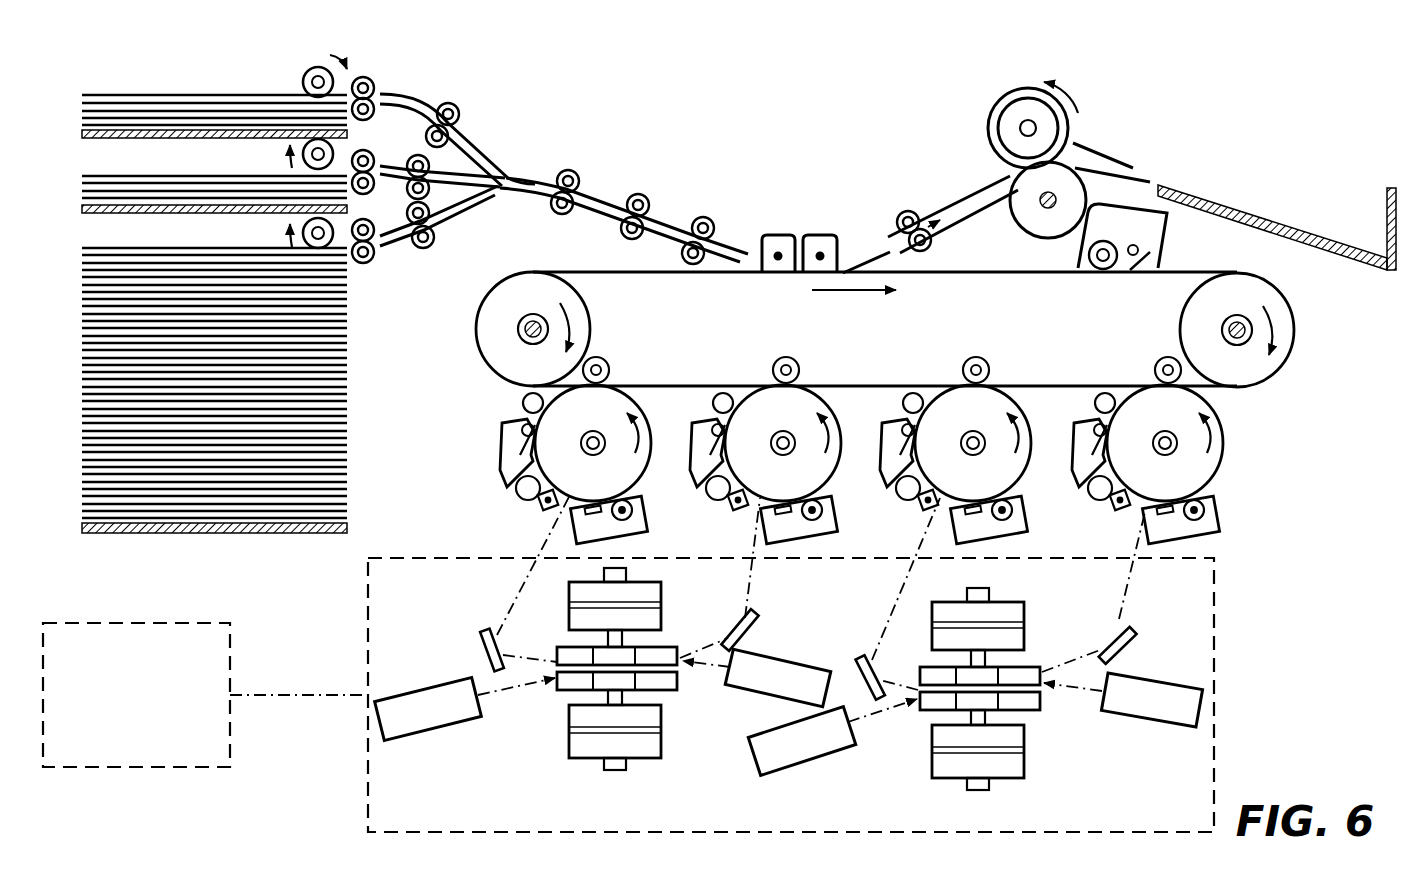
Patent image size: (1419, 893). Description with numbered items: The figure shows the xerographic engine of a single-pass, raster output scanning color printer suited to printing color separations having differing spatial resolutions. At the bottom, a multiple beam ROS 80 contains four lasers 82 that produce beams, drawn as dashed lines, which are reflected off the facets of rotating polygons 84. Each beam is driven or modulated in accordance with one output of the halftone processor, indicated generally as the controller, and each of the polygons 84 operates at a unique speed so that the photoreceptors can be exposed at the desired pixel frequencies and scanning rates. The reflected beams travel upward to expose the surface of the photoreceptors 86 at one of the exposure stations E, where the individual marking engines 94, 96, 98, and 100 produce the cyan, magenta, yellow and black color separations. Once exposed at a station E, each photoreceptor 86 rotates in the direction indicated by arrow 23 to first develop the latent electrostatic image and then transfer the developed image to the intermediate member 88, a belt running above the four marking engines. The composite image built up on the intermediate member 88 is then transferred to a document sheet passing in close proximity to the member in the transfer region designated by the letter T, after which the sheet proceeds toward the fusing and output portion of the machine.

The arrow 23 is at (879, 429).
The multiple beam ROS 80 is at (350, 798).
The lasers 82 is at (428, 713).
The polygons 84 is at (556, 657).
The photoreceptors 86 is at (651, 437).
The intermediate member 88 is at (668, 275).
The marking engine 94 is at (656, 481).
The marking engine 96 is at (851, 484).
The marking engine 98 is at (1036, 484).
The marking engine 100 is at (1243, 470).
The transfer region T is at (792, 217).
The exposure station E is at (1175, 612).